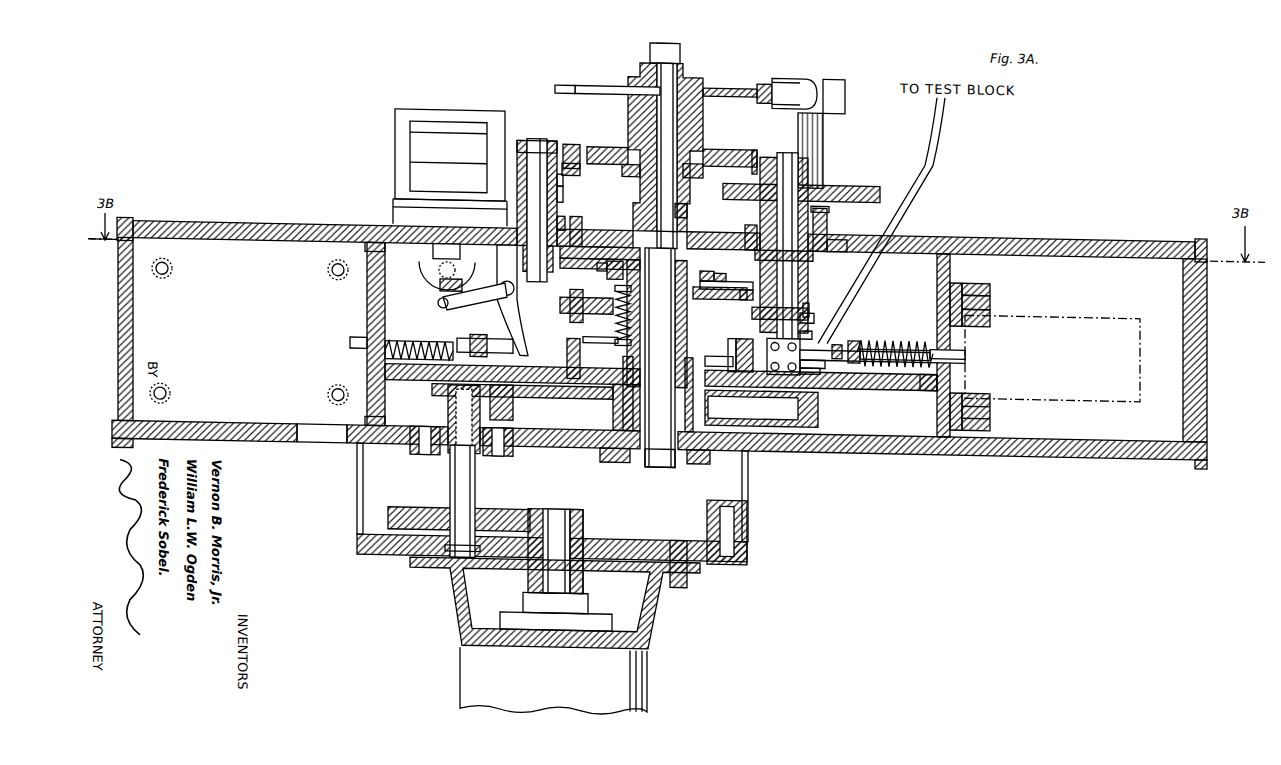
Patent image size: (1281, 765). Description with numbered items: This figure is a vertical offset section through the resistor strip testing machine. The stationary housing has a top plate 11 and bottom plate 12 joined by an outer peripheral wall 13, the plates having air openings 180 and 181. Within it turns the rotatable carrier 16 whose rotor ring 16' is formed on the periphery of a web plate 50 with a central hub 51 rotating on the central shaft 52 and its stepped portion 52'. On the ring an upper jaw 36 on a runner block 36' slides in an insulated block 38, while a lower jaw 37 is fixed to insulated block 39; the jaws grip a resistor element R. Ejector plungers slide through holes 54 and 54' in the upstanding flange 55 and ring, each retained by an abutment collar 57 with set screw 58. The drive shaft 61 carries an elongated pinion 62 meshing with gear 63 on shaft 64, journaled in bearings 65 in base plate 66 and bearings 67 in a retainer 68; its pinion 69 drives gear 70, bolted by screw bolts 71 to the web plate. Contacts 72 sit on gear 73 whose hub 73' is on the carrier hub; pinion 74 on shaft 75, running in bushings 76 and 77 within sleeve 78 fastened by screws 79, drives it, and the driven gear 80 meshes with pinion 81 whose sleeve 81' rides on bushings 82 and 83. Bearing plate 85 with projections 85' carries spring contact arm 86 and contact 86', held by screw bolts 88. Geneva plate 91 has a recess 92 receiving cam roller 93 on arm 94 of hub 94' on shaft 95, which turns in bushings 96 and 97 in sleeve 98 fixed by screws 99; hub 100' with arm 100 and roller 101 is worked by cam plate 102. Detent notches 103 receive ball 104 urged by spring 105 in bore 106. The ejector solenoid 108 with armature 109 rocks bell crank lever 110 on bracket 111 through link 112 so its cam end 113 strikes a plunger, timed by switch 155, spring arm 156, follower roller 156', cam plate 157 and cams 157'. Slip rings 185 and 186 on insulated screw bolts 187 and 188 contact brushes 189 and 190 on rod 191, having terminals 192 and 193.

The top plate 11 is at (250, 231).
The bottom plate 12 is at (279, 449).
The outer peripheral ring or wall 13 is at (1188, 342).
The rotatable carrier 16 is at (924, 345).
The rotor ring 16' is at (357, 334).
The upper gripping jaw 36 is at (991, 296).
The runner block 36' is at (986, 328).
The lower gripping jaw 37 is at (987, 390).
The insulated block 38 is at (953, 287).
The insulated block 39 is at (963, 388).
The web plate 50 is at (907, 385).
The central upstanding hub 51 is at (678, 316).
The central shaft 52 is at (691, 256).
The stepped portion of shaft 52' is at (662, 255).
The hole 54 is at (882, 392).
The hole 54' is at (970, 359).
The upstanding flange 55 is at (837, 343).
The abutment collar 57 is at (877, 385).
The set screw 58 is at (855, 344).
The vertically projecting shaft 61 is at (555, 551).
The elongated pinion 62 is at (583, 520).
The gear 63 is at (503, 517).
The shaft 64 is at (462, 501).
The bearings 65 is at (473, 553).
The base plate 66 is at (618, 560).
The bearings 67 is at (440, 456).
The retainer 68 is at (495, 456).
The pinion 69 is at (448, 404).
The gear 70 is at (522, 403).
The screw bolts 71 is at (707, 413).
The contacts 72 is at (577, 293).
The gear 73 is at (784, 247).
The hub 73' is at (600, 330).
The pinion 74 is at (817, 316).
The shaft 75 is at (783, 262).
The bushing 76 is at (800, 284).
The bushing 77 is at (814, 230).
The spacing and supporting sleeve 78 is at (843, 240).
The screws 79 is at (825, 233).
The driven gear 80 is at (847, 189).
The pinion 81 is at (621, 180).
The hub or sleeve 81' is at (730, 101).
The bushing 82 is at (687, 208).
The bushing 83 is at (683, 62).
The bearing plate 85 is at (700, 267).
The reduced projecting portions 85' is at (715, 266).
The spring contact arm 86 is at (726, 272).
The contact 86' is at (751, 284).
The screw bolts 88 is at (745, 238).
The Geneva plate 91 is at (623, 272).
The open recess 92 is at (602, 268).
The cam roller 93 is at (620, 272).
The arm 94 is at (600, 242).
The hub 94' is at (538, 268).
The shaft 95 is at (533, 212).
The bushing 96 is at (560, 227).
The bushing 97 is at (560, 183).
The sleeve 98 is at (560, 198).
The screws 99 is at (580, 227).
The arm 100 is at (589, 170).
The hub 100' is at (499, 148).
The roller 101 is at (567, 146).
The cam plate 102 is at (720, 156).
The detent notches 103 is at (634, 322).
The ball 104 is at (642, 283).
The spring 105 is at (632, 306).
The bore 106 is at (640, 348).
The ejector solenoid 108 is at (395, 157).
The armature 109 is at (433, 256).
The bell crank lever 110 is at (487, 303).
The bracket 111 is at (502, 264).
The link 112 is at (438, 289).
The cam end 113 is at (527, 343).
The ejector timing switch 155 is at (823, 76).
The spring arm 156 is at (794, 76).
The follower roller 156' is at (759, 73).
The cam plate 157 is at (617, 68).
The ejector timing cams 157' is at (583, 67).
The openings 180 is at (1083, 250).
The openings 181 is at (1072, 449).
The slip ring 185 is at (720, 346).
The slip ring 186 is at (713, 357).
The insulated screw bolt 187 is at (573, 340).
The insulated screw bolt 188 is at (758, 345).
The brush 189 is at (812, 332).
The brush 190 is at (807, 362).
The rod 191 is at (808, 304).
The terminal 192 is at (802, 343).
The terminal 193 is at (812, 370).
The resistor element R is at (1138, 388).